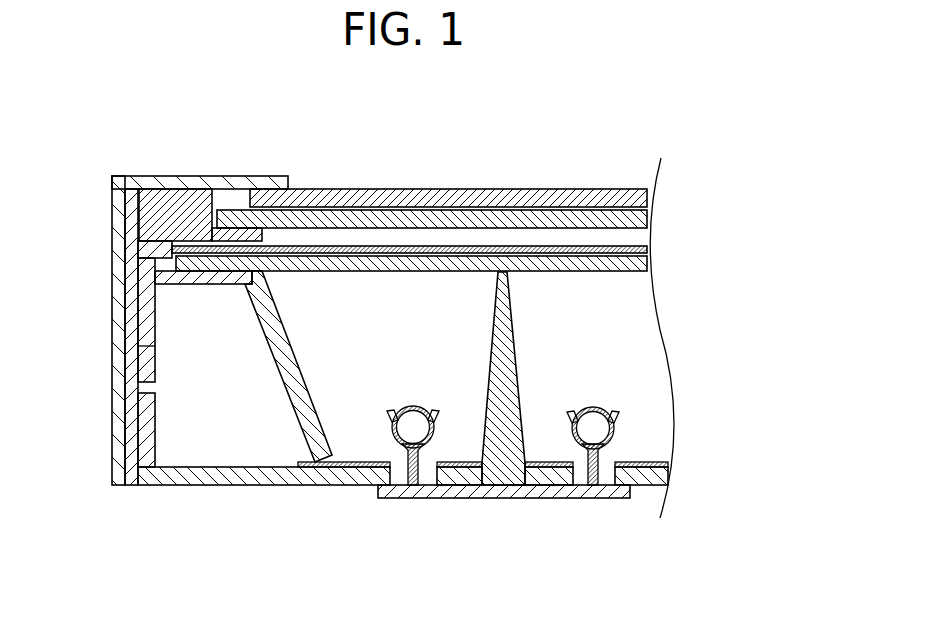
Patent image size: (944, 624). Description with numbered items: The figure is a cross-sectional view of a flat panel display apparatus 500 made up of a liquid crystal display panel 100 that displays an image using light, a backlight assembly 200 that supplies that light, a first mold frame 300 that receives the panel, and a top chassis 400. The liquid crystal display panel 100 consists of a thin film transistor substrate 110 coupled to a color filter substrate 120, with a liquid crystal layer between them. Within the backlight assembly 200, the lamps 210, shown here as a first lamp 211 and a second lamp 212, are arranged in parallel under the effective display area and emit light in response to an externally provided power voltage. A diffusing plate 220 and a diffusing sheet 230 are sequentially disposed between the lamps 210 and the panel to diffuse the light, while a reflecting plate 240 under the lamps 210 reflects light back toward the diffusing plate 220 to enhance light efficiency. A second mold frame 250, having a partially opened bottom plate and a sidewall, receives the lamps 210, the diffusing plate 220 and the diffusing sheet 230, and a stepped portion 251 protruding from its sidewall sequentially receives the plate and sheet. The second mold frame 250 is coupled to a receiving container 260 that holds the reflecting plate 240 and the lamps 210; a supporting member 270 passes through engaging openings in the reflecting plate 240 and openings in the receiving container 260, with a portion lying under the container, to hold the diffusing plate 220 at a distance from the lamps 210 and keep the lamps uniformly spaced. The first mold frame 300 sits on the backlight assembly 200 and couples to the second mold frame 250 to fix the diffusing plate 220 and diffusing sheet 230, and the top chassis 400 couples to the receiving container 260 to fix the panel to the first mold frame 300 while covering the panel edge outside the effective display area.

The flat panel display apparatus 500 is at (385, 107).
The liquid crystal display panel 100 is at (504, 212).
The thin film transistor substrate 110 is at (640, 221).
The color filter substrate 120 is at (646, 204).
The backlight assembly 200 is at (480, 425).
The lamps 210 is at (503, 438).
The first lamp 211 is at (413, 407).
The second lamp 212 is at (593, 408).
The diffusing plate 220 is at (647, 264).
The diffusing sheet 230 is at (647, 250).
The reflecting plate 240 is at (672, 465).
The second mold frame 250 is at (130, 448).
The stepped portion 251 is at (201, 266).
The receiving container 260 is at (668, 477).
The supporting member 270 is at (636, 491).
The first mold frame 300 is at (139, 224).
The top chassis 400 is at (122, 268).